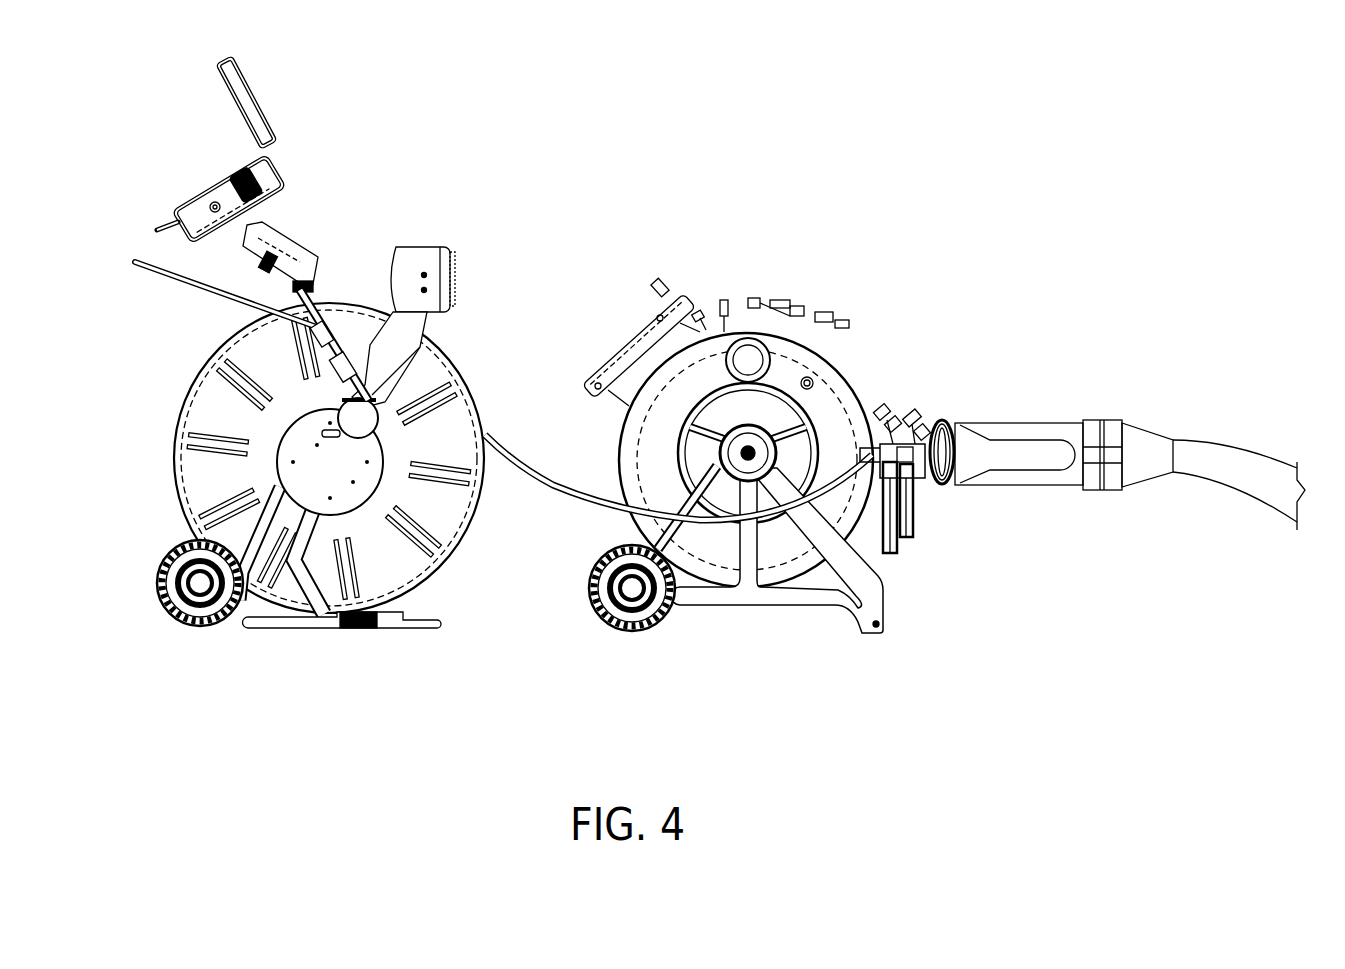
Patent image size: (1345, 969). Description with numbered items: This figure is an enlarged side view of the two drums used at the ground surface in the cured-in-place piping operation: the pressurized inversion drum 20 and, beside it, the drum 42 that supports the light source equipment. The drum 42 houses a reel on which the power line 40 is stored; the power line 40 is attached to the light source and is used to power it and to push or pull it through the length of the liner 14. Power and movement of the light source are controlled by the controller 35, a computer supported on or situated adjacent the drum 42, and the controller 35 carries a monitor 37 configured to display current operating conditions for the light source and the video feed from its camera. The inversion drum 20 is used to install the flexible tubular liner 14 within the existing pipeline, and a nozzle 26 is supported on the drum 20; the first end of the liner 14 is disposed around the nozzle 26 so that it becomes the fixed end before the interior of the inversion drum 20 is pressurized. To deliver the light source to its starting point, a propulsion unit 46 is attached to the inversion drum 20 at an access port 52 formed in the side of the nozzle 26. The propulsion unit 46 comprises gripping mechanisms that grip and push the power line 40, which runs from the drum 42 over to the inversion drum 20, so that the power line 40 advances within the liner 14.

The liner 14 is at (1233, 440).
The pressurized inversion drum 20 is at (842, 363).
The nozzle 26 is at (1153, 478).
The controller 35 is at (285, 173).
The monitor 37 is at (240, 162).
The power line 40 is at (553, 492).
The drum 42 is at (345, 307).
The propulsion unit 46 is at (935, 420).
The access port 52 is at (957, 488).